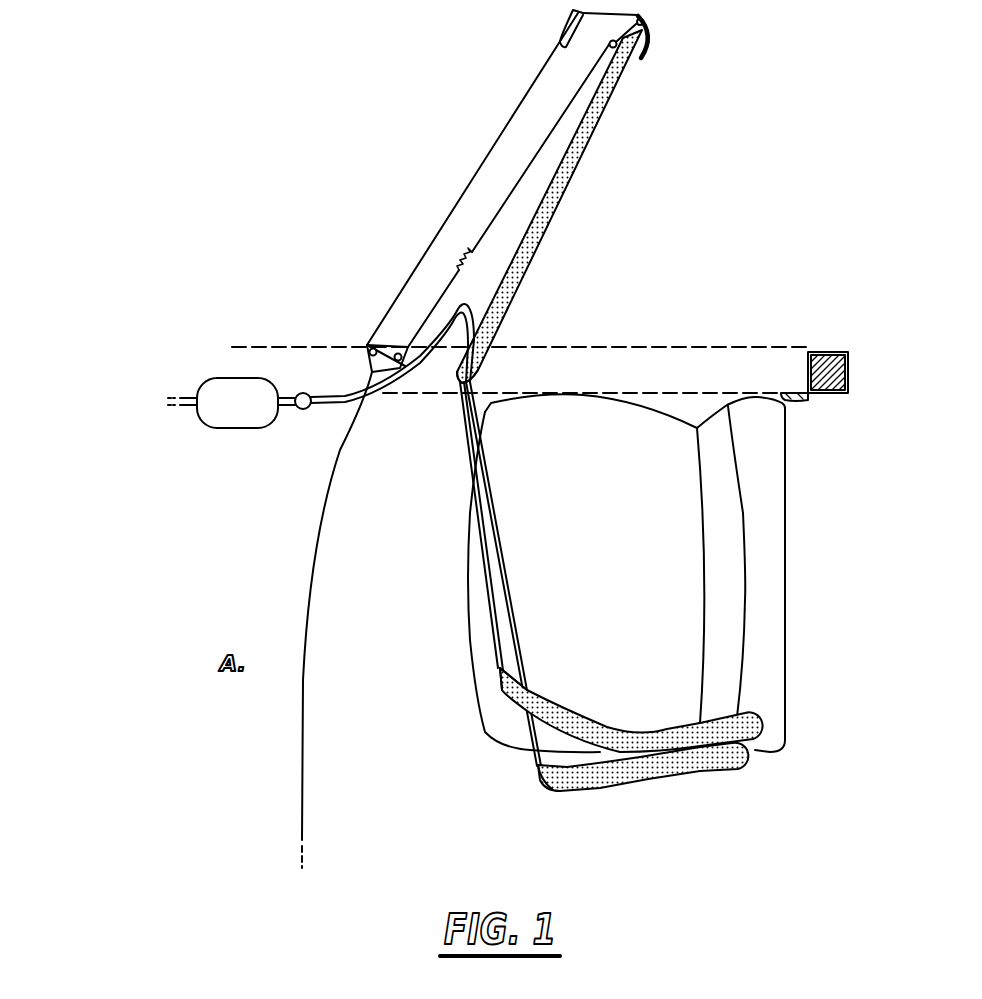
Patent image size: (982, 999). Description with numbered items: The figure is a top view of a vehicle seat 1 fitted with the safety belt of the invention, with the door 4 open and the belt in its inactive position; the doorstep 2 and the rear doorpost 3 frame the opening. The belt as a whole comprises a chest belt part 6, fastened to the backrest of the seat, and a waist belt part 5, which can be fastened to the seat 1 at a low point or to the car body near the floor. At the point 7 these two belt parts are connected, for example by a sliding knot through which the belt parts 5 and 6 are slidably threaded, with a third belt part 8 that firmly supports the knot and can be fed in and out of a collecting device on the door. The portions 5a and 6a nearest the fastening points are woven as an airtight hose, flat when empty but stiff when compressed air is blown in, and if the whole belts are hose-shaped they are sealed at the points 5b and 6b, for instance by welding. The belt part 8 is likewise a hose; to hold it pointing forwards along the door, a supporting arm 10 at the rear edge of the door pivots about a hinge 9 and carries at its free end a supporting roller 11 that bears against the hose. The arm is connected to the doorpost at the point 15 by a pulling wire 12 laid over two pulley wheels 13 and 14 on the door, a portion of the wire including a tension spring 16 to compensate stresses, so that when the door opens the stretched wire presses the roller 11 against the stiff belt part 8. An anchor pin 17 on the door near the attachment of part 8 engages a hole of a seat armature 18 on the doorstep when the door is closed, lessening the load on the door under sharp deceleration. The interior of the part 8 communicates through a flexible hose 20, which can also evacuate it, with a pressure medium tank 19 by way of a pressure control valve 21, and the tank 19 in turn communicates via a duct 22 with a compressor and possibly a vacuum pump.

The seat 1 is at (672, 610).
The doorstep 2 is at (608, 352).
The rear doorpost 3 is at (818, 367).
The door 4 is at (480, 202).
The waist belt part 5 is at (492, 607).
The belt portion 5a is at (602, 745).
The sealing point 5b is at (500, 670).
The chest belt part 6 is at (512, 635).
The belt portion 6a is at (668, 765).
The sealing point 6b is at (537, 767).
The connection point 7 is at (462, 384).
The third belt part 8 is at (557, 207).
The hinge 9 is at (653, 30).
The supporting arm 10 is at (652, 45).
The supporting roller 11 is at (643, 60).
The pulling wire 12 is at (515, 177).
The pulley wheel 13 is at (610, 47).
The pulley wheel 14 is at (398, 354).
The connection point 15 is at (360, 377).
The tension spring 16 is at (458, 266).
The anchor pin 17 is at (637, 23).
The seat armature 18 is at (807, 395).
The pressure medium tank 19 is at (240, 390).
The flexible hose 20 is at (377, 399).
The pressure control valve 21 is at (303, 393).
The duct 22 is at (184, 397).